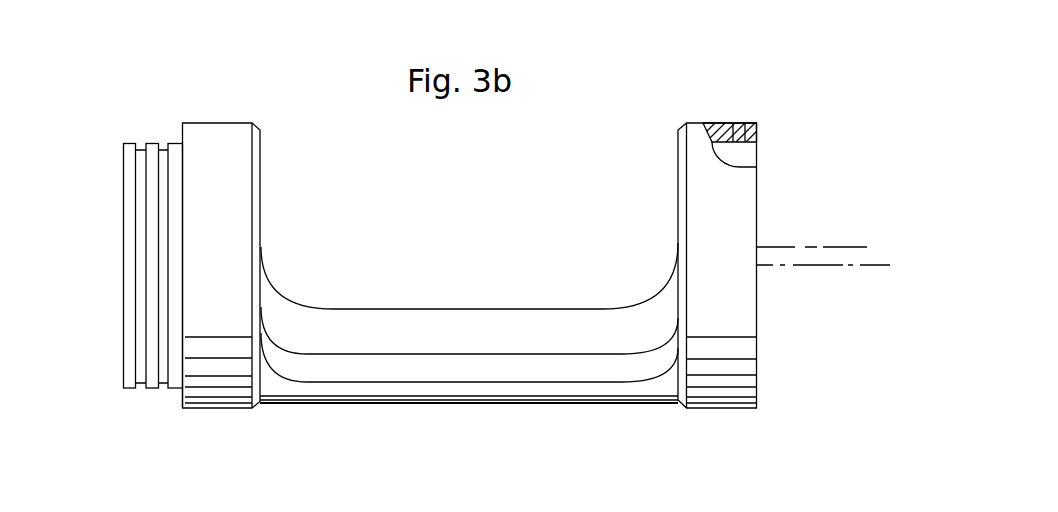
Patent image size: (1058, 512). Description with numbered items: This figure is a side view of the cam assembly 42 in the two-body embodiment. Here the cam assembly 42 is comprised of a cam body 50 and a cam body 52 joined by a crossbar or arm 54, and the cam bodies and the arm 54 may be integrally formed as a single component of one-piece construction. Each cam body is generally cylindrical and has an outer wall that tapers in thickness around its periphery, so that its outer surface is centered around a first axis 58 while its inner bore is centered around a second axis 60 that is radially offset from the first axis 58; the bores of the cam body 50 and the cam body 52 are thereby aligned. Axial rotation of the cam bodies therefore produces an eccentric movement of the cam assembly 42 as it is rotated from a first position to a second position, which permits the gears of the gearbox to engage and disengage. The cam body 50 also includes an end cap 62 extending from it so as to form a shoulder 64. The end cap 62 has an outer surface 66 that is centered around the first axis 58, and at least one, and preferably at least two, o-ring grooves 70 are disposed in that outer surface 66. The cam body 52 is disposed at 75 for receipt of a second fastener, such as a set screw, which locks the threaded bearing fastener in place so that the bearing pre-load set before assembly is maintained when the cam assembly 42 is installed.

The cam assembly 42 is at (738, 233).
The cam body 50 is at (218, 94).
The cam body 52 is at (678, 192).
The crossbar or arm 54 is at (497, 403).
The first axis 58 is at (813, 267).
The second axis 60 is at (783, 245).
The end cap 62 is at (120, 256).
The shoulder 64 is at (176, 404).
The outer surface 66 is at (128, 388).
The o-ring grooves 70 is at (162, 388).
The second fastener receiving location 75 is at (745, 108).